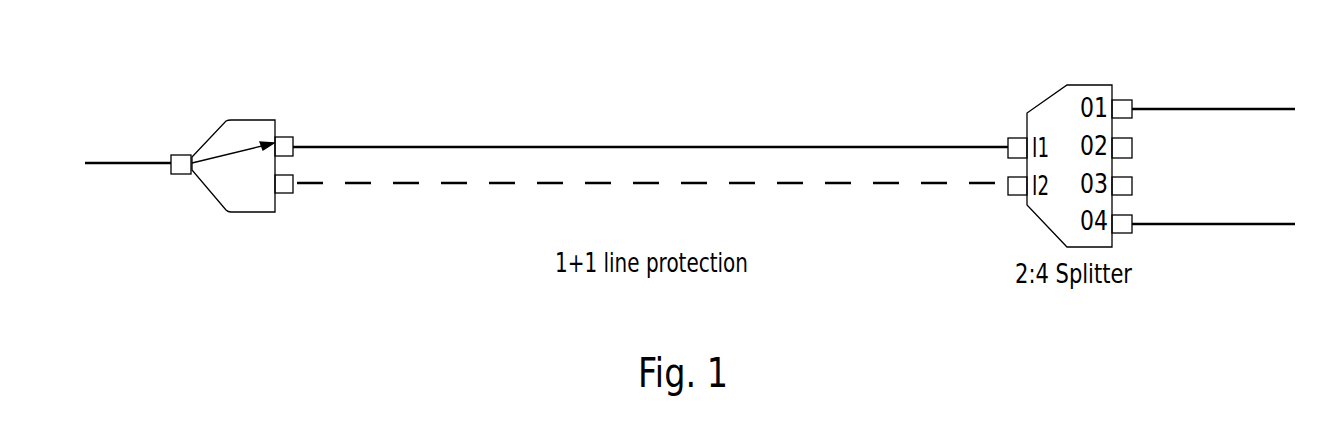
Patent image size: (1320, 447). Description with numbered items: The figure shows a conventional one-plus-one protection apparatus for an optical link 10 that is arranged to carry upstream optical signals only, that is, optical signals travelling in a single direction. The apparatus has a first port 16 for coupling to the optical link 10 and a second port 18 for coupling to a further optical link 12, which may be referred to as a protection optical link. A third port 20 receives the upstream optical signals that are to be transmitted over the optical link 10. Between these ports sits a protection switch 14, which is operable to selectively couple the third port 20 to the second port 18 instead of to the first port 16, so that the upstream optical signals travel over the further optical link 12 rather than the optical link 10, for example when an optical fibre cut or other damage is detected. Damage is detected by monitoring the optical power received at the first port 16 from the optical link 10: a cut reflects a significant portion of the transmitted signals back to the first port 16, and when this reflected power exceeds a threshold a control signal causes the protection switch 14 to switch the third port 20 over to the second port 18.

The optical link 10 is at (630, 145).
The further optical link 12 is at (358, 186).
The protection switch 14 is at (263, 119).
The first port 16 is at (288, 137).
The second port 18 is at (288, 194).
The third port 20 is at (177, 154).